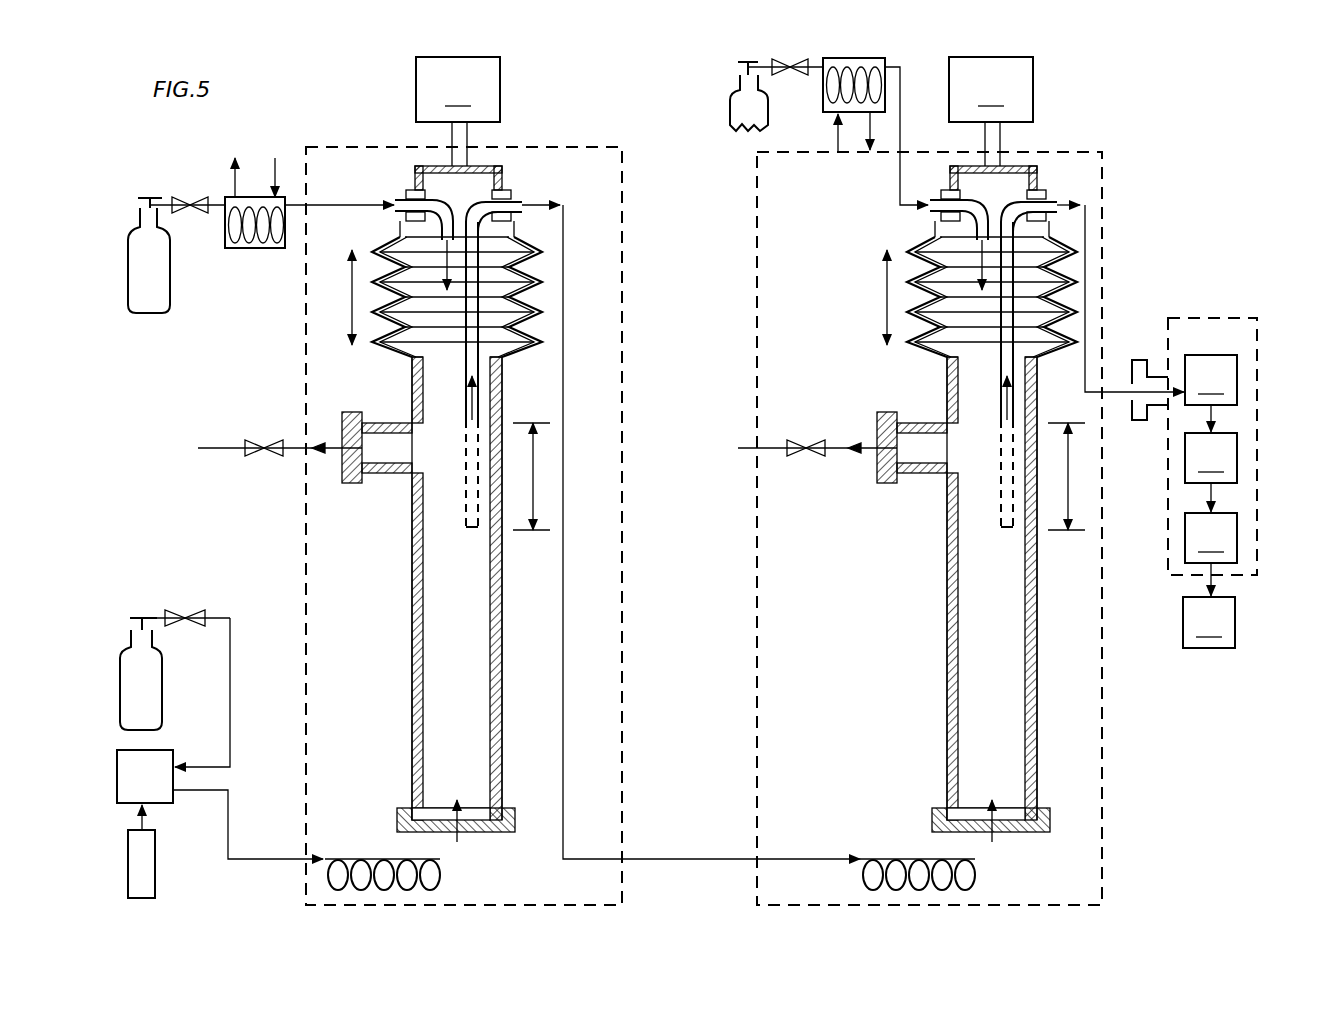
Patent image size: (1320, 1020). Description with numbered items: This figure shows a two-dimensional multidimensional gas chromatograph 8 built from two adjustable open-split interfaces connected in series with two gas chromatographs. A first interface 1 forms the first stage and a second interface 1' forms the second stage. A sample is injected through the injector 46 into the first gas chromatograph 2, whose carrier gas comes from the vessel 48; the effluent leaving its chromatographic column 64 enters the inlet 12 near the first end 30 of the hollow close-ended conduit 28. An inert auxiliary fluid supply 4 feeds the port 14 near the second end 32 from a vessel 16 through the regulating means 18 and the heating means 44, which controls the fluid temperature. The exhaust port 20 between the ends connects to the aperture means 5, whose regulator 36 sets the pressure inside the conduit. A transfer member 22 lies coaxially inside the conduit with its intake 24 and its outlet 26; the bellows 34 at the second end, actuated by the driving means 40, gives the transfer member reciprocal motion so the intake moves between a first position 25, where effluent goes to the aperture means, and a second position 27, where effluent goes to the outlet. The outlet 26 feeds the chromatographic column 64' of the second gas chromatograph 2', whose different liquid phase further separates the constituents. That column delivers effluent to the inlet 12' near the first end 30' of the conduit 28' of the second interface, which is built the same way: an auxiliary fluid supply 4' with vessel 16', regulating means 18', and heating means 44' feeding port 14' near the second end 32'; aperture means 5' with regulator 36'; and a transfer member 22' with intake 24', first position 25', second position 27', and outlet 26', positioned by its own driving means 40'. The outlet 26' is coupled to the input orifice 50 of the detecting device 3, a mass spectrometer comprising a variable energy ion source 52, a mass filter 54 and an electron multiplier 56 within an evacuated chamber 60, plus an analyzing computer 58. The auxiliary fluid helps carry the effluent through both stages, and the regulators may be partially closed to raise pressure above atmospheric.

The first interface 1 is at (428, 588).
The second interface 1' is at (958, 588).
The first gas chromatograph 2 is at (204, 745).
The second gas chromatograph 2' is at (851, 814).
The detecting device 3 is at (1197, 307).
The inert auxiliary fluid supply 4 is at (279, 165).
The inert auxiliary fluid supply 4' is at (917, 127).
The aperture means 5 is at (206, 401).
The aperture means 5' is at (831, 394).
The multidimensional gas chromatograph 8 is at (1113, 240).
The inlet 12 is at (483, 846).
The inlet 12' is at (1017, 846).
The port 14 is at (399, 224).
The port 14' is at (924, 245).
The vessel 16 is at (149, 282).
The vessel 16' is at (714, 96).
The inert auxiliary fluid regulating means 18 is at (172, 175).
The inert auxiliary fluid regulating means 18' is at (754, 72).
The exhaust port 20 is at (627, 468).
The transfer member 22 is at (469, 297).
The transfer member 22' is at (992, 297).
The intake 24 is at (455, 321).
The intake 24' is at (988, 321).
The first position 25 is at (456, 473).
The first position 25' is at (990, 473).
The outlet 26 is at (536, 206).
The outlet 26' is at (1090, 205).
The second position 27 is at (459, 554).
The second position 27' is at (992, 552).
The conduit 28 is at (475, 588).
The conduit 28' is at (992, 588).
The first end 30 is at (470, 845).
The first end 30' is at (1006, 846).
The second end 32 is at (481, 192).
The second end 32' is at (1017, 196).
The bellows 34 is at (505, 360).
The regulator 36 is at (280, 422).
The regulator 36' is at (817, 420).
The driving means 40 is at (458, 111).
The driving means 40' is at (991, 111).
The heating means 44 is at (255, 231).
The heating means 44' is at (835, 105).
The injector 46 is at (155, 858).
The vessel 48 is at (163, 683).
The input orifice 50 is at (1130, 386).
The variable energy ion source 52 is at (1211, 380).
The mass filter 54 is at (1211, 458).
The electron multiplier 56 is at (1211, 538).
The analyzing computer 58 is at (1209, 622).
The evacuated chamber 60 is at (1168, 490).
The chromatographic column 64 is at (382, 844).
The chromatographic column 64' is at (917, 834).